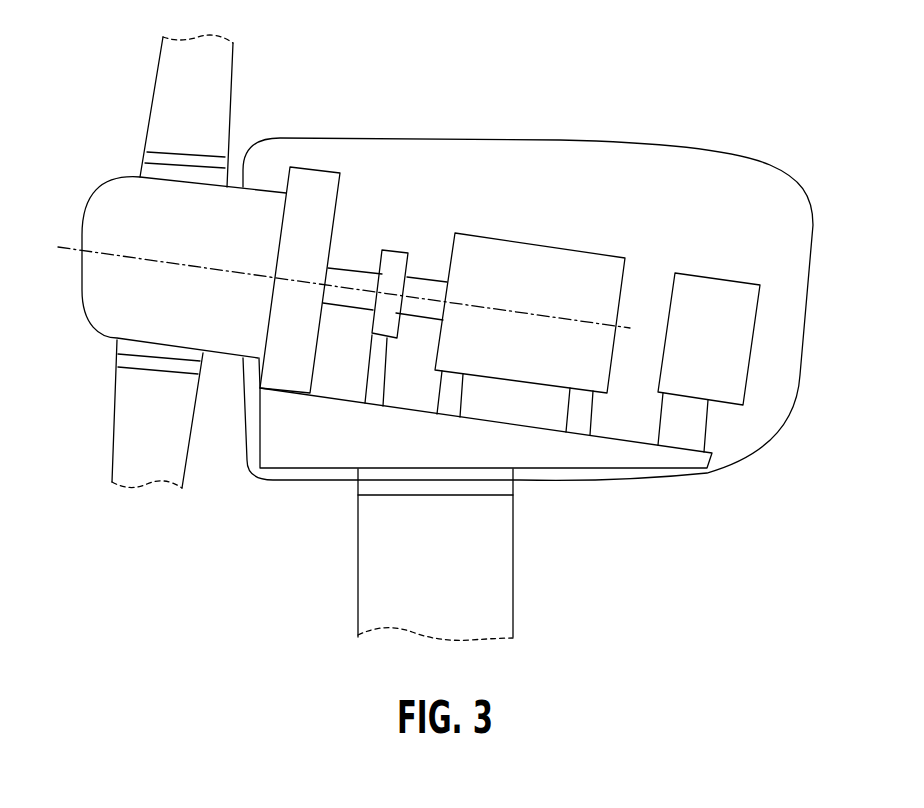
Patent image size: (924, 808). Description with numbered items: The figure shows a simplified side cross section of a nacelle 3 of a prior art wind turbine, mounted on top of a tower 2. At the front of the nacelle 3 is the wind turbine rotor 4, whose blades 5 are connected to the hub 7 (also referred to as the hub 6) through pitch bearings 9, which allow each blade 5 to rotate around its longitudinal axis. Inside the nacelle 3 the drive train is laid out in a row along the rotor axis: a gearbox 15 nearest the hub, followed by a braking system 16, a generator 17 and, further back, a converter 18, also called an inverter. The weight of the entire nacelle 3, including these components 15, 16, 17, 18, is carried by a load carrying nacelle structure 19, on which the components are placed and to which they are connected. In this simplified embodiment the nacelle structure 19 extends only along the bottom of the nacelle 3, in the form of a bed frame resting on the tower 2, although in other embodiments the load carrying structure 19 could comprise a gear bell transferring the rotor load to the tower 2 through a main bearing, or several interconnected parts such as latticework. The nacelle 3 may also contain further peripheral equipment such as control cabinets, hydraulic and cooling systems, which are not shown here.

The tower 2 is at (492, 608).
The wind turbine nacelle 3 is at (810, 134).
The wind turbine rotor 4 is at (83, 354).
The wind turbine blade 5 is at (205, 105).
The hub 6 is at (58, 243).
The hub 7 is at (150, 242).
The pitch bearing 9 is at (130, 360).
The gearbox 15 is at (313, 195).
The breaking system 16 is at (397, 263).
The generator 17 is at (505, 270).
The converter 18 is at (722, 315).
The nacelle structure 19 is at (578, 452).